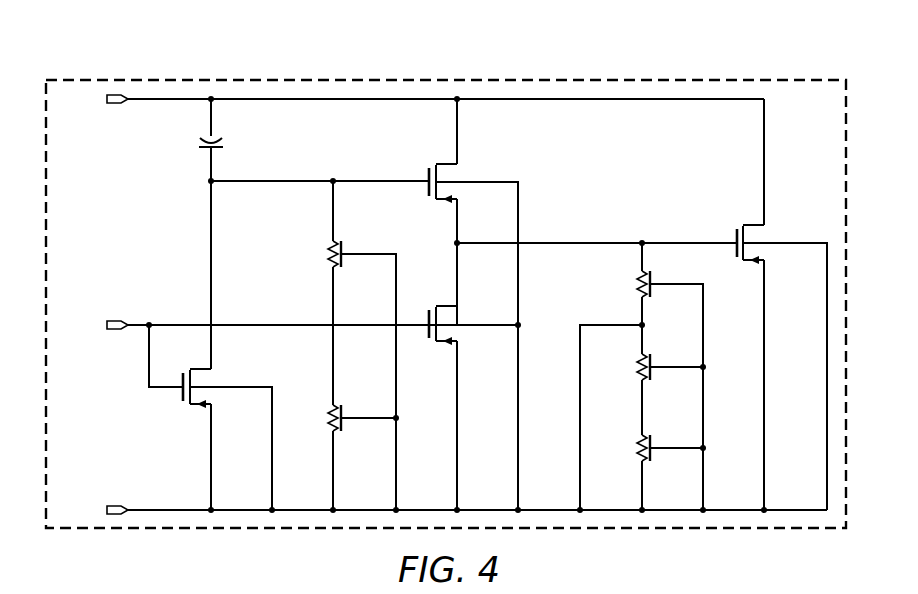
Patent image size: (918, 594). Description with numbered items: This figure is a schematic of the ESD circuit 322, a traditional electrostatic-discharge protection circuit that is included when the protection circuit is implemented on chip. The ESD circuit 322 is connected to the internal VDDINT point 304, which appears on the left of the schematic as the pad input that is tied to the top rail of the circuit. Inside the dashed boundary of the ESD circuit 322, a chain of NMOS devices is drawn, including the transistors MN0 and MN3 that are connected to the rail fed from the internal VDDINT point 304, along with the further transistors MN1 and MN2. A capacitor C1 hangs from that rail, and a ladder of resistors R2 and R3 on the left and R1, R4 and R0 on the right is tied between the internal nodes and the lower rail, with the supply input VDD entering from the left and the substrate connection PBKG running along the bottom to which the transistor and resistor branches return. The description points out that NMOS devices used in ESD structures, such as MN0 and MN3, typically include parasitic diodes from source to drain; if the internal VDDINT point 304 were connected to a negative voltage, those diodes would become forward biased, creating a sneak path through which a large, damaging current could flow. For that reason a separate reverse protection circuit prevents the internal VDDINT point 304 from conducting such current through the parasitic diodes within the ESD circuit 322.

The ESD circuit 322 is at (592, 81).
The internal VDDINT point 304 is at (118, 107).
The capacitor C1 is at (198, 140).
The NMOS device MN0 is at (773, 240).
The NMOS transistor MN1 is at (219, 383).
The NMOS transistor MN2 is at (465, 321).
The NMOS device MN3 is at (465, 179).
The resistor R0 is at (628, 448).
The resistor R1 is at (628, 284).
The resistor R2 is at (320, 254).
The resistor R3 is at (320, 418).
The resistor R4 is at (628, 367).
The supply pin VDD is at (96, 324).
The substrate pin PBKG is at (91, 509).